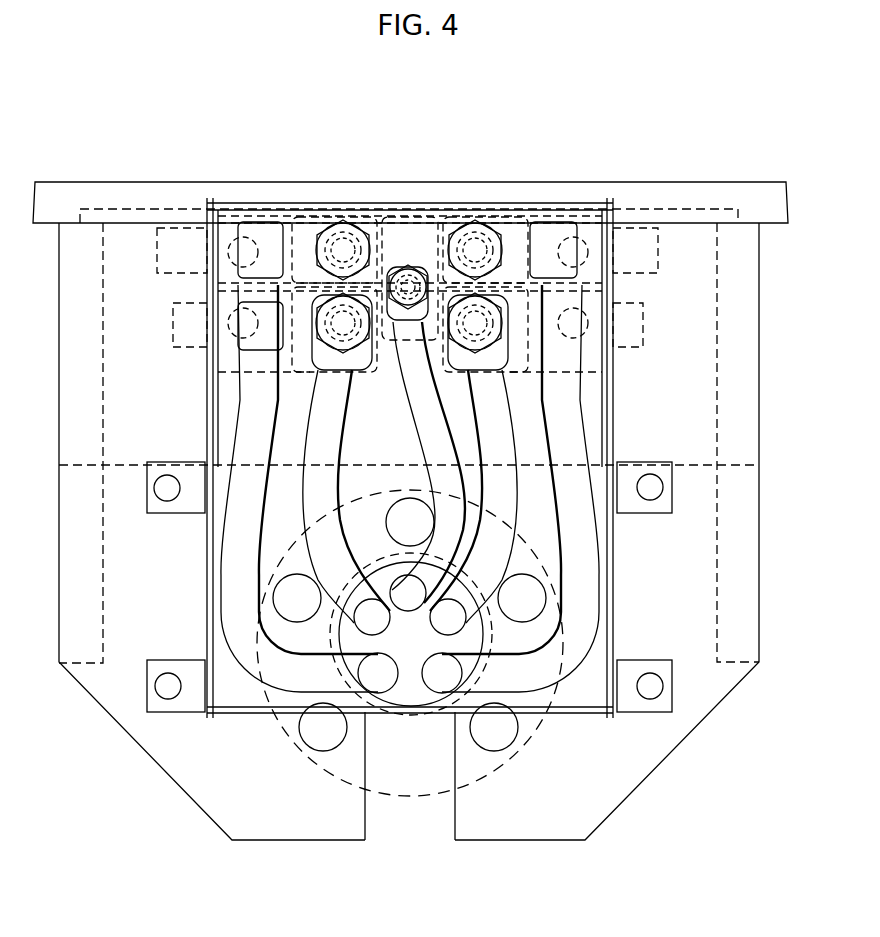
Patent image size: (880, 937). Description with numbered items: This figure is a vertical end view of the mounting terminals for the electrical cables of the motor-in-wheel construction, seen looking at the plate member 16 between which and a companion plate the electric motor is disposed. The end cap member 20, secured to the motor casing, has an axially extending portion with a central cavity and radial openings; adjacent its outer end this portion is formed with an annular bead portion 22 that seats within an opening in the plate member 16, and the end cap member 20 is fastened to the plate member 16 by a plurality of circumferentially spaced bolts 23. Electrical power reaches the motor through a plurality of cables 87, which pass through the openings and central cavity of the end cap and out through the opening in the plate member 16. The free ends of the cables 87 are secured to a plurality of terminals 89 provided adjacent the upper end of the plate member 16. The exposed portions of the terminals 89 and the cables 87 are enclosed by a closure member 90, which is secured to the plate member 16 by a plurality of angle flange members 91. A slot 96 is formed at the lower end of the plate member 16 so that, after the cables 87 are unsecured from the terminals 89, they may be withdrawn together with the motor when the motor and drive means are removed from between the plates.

The plate member 16 is at (220, 810).
The end cap member 20 is at (402, 790).
The annular bead portion 22 is at (486, 640).
The bolts 23 is at (405, 508).
The cables 87 is at (420, 420).
The terminals 89 is at (340, 245).
The closure member 90 is at (612, 325).
The angle flange members 91 is at (157, 506).
The slot 96 is at (453, 824).